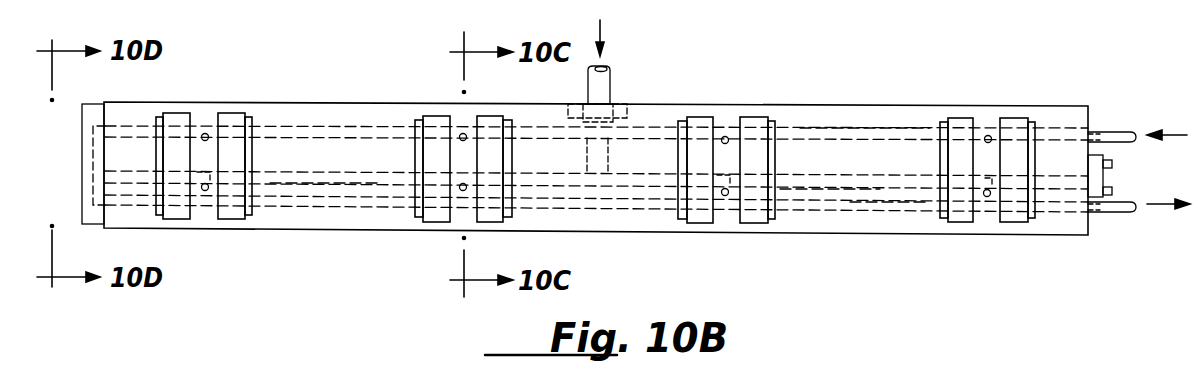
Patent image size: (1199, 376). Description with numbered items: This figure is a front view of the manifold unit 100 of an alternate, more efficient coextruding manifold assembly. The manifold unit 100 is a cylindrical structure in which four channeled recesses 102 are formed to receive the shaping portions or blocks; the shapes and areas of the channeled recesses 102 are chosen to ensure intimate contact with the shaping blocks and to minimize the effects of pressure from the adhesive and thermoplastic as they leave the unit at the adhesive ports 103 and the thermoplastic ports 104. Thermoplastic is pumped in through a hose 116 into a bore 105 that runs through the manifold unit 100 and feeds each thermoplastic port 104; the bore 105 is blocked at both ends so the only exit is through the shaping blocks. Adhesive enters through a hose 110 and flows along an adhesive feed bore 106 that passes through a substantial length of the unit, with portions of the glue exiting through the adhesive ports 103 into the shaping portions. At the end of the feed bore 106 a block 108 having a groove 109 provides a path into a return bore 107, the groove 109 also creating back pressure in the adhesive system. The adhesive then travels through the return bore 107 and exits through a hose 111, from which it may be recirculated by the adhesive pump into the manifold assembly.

The manifold unit 100 is at (1065, 115).
The channeled recesses 102 is at (235, 115).
The adhesive ports 103 is at (206, 133).
The thermoplastic ports 104 is at (206, 191).
The bore 105 is at (332, 182).
The adhesive feed bore 106 is at (873, 133).
The return bore 107 is at (900, 203).
The block 108 is at (85, 129).
The groove 109 is at (95, 162).
The hose 110 is at (1105, 135).
The hose 111 is at (1120, 208).
The hose 116 is at (605, 83).